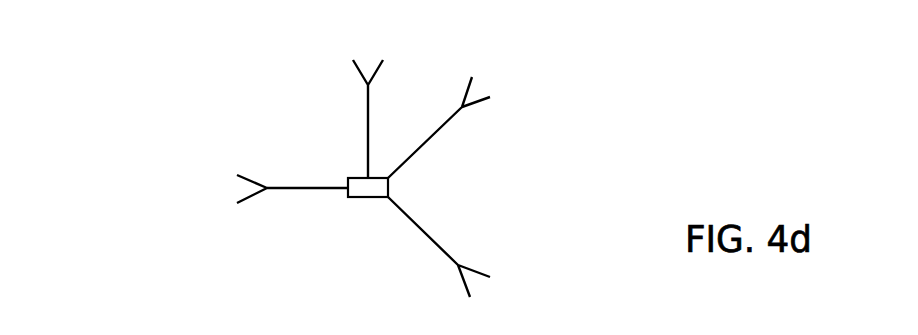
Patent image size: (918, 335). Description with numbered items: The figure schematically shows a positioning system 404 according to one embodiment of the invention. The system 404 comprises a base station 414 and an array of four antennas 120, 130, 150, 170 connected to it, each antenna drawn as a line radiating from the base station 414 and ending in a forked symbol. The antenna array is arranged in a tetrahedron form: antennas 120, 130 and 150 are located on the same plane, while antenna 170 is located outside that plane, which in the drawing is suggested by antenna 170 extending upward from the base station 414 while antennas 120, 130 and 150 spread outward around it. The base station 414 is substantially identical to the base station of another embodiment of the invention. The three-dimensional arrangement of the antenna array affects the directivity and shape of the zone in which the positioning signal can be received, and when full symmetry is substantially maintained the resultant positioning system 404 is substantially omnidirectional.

The positioning system 404 is at (213, 73).
The base station 414 is at (369, 199).
The antenna 170 is at (368, 62).
The antenna 150 is at (492, 90).
The antenna 120 is at (242, 187).
The antenna 130 is at (482, 293).